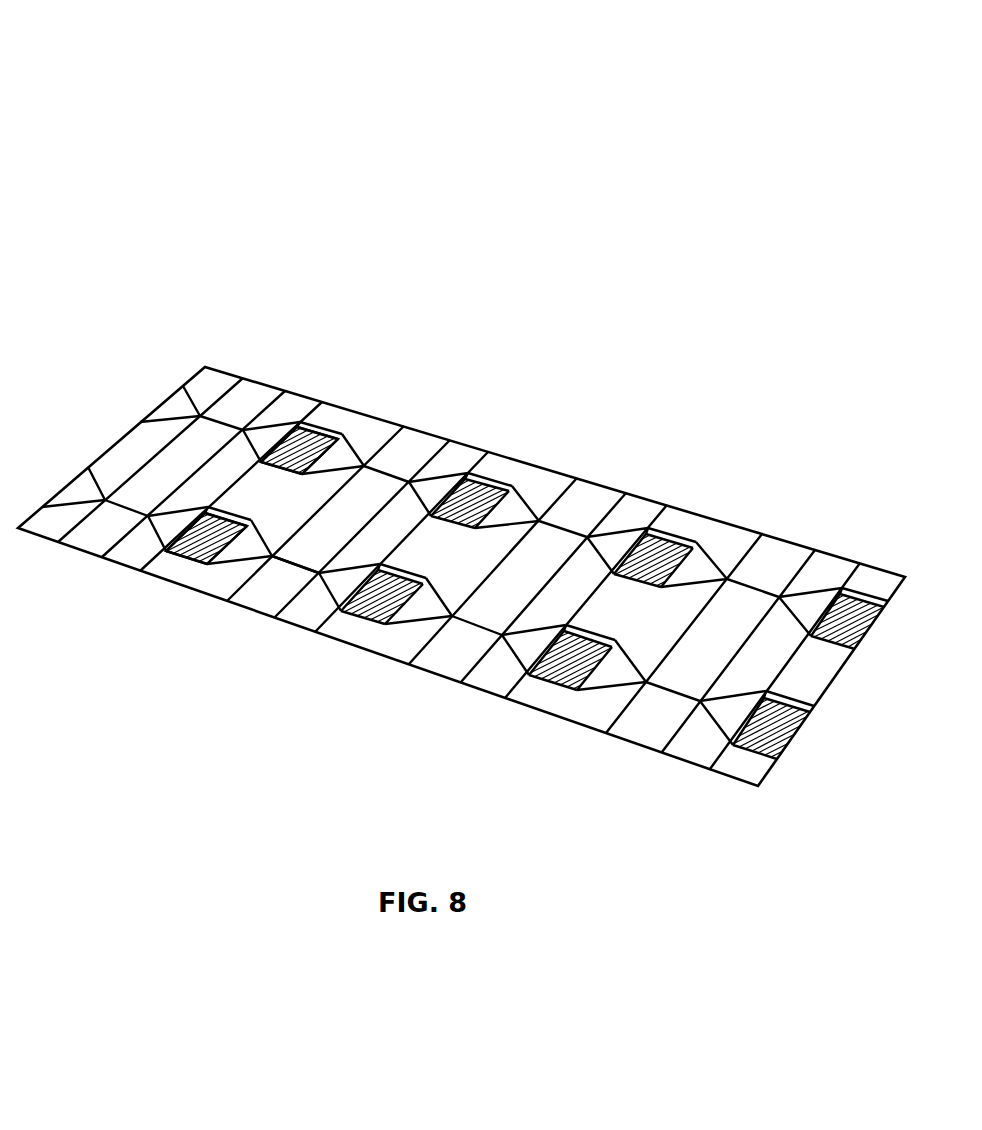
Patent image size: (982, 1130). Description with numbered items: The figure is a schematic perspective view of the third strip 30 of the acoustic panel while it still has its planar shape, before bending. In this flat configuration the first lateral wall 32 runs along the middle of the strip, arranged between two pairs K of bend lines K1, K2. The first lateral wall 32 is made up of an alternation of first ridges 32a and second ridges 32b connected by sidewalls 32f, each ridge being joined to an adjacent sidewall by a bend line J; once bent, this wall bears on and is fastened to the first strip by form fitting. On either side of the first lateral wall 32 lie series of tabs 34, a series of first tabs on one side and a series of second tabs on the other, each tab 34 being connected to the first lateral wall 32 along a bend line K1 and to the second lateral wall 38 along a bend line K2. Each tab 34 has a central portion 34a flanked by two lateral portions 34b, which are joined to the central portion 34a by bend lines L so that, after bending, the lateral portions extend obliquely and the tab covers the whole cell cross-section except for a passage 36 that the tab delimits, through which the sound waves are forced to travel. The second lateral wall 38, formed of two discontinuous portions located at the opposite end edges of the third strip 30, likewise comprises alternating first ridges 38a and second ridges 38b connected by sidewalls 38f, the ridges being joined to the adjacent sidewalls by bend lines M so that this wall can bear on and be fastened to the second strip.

The third strip 30 is at (143, 100).
The first lateral wall 32 is at (188, 612).
The first ridges 32a is at (252, 500).
The second ridges 32b is at (318, 543).
The sidewalls 32f is at (255, 497).
The tab 34 is at (575, 675).
The central portion 34a is at (645, 584).
The lateral portions 34b is at (620, 545).
The passage 36 is at (207, 500).
The second lateral wall 38 is at (244, 418).
The first ridges 38a is at (362, 399).
The second ridges 38b is at (253, 395).
The sidewalls 38f is at (295, 408).
The bend line J is at (560, 680).
The pair of bend lines K is at (565, 374).
The bend line K1 is at (440, 478).
The bend line K2 is at (450, 732).
The bend line L is at (676, 545).
The bend line M is at (845, 573).